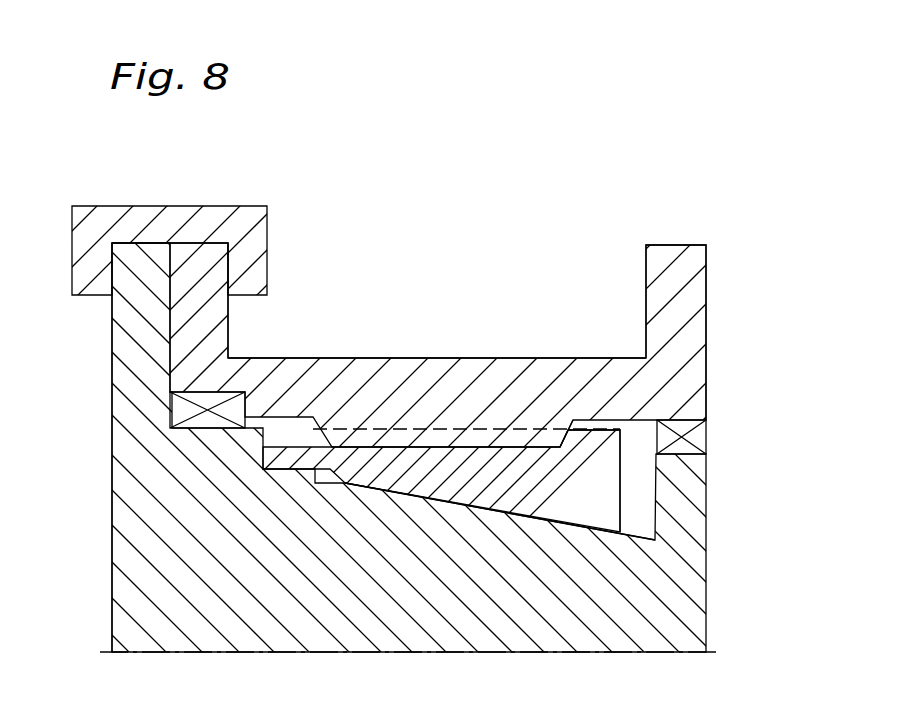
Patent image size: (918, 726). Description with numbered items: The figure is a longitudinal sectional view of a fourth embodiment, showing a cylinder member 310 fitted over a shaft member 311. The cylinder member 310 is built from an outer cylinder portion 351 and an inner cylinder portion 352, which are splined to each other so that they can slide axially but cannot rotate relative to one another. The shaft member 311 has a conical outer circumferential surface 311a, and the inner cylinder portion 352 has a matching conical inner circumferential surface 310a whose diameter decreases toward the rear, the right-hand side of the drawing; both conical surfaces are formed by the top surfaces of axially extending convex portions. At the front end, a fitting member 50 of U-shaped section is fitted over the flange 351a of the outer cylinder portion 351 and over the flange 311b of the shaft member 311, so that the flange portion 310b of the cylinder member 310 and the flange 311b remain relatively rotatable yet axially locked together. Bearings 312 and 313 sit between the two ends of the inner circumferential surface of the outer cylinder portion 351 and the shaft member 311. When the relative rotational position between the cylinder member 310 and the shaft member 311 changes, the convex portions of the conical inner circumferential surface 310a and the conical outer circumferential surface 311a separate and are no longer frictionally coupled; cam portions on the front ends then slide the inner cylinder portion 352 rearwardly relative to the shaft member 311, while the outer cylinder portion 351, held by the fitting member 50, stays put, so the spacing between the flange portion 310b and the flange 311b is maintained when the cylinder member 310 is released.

The fitting member 50 is at (152, 205).
The cylinder member 310 is at (527, 357).
The conical inner circumferential surface 310a is at (576, 527).
The flange portion 310b is at (693, 292).
The shaft member 311 is at (418, 628).
The conical outer circumferential surface 311a is at (493, 504).
The flange 311b is at (112, 333).
The bearing 312 is at (176, 412).
The bearing 313 is at (706, 437).
The outer cylinder portion 351 is at (405, 373).
The flange 351a is at (222, 322).
The inner cylinder portion 352 is at (447, 465).